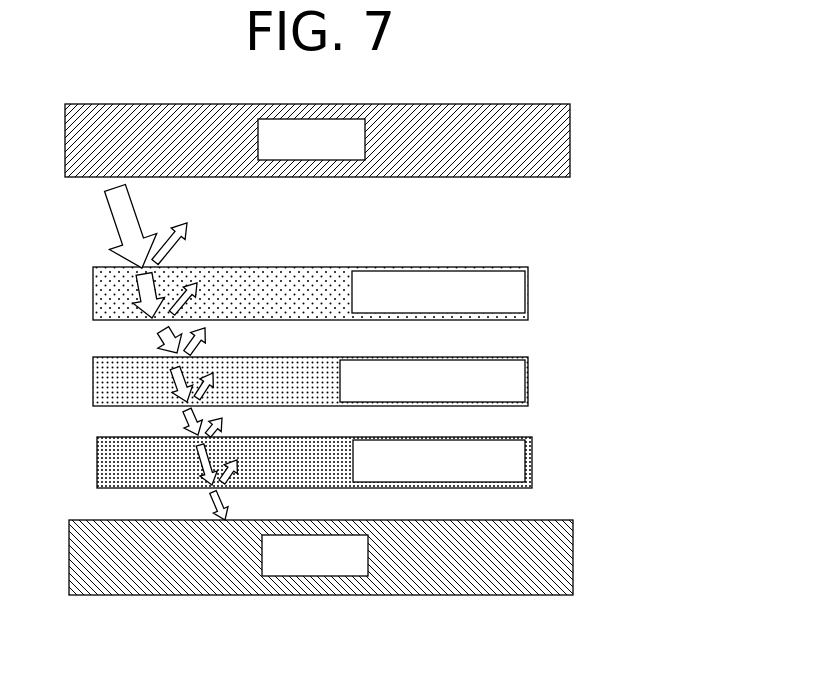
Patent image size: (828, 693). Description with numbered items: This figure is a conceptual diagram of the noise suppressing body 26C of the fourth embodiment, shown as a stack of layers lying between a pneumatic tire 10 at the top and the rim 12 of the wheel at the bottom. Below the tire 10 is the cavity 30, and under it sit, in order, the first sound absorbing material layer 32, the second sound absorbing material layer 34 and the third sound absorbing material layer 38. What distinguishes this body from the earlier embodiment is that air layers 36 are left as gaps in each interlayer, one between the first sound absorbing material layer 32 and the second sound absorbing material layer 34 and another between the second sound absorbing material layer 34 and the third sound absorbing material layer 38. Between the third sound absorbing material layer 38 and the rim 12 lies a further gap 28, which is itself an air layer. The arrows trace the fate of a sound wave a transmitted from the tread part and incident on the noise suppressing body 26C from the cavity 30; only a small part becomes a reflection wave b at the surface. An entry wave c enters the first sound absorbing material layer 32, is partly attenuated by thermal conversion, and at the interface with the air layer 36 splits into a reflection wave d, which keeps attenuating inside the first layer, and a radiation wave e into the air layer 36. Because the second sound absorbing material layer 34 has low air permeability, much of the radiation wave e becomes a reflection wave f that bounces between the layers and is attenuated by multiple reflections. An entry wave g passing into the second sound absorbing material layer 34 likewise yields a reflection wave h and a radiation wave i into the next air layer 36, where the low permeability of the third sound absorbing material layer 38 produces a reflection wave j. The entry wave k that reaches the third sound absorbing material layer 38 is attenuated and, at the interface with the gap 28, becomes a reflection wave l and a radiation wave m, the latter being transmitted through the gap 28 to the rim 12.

The pneumatic tire 10 is at (570, 140).
The rim 12 is at (573, 555).
The noise suppressing body 26C is at (400, 262).
The gap 28 is at (503, 503).
The cavity 30 is at (505, 232).
The first sound absorbing material layer 32 is at (528, 292).
The second sound absorbing material layer 34 is at (528, 380).
The air layer 36 is at (505, 338).
The third sound absorbing material layer 38 is at (532, 460).
The sound wave a is at (116, 234).
The reflection wave b is at (176, 245).
The entry wave c is at (138, 298).
The reflection wave d is at (199, 298).
The radiation wave e is at (158, 338).
The reflection wave f is at (210, 346).
The entry wave g is at (172, 380).
The reflection wave h is at (215, 388).
The radiation wave i is at (184, 412).
The reflection wave j is at (228, 428).
The entry wave k is at (198, 462).
The reflection wave l is at (240, 468).
The radiation wave m is at (212, 498).